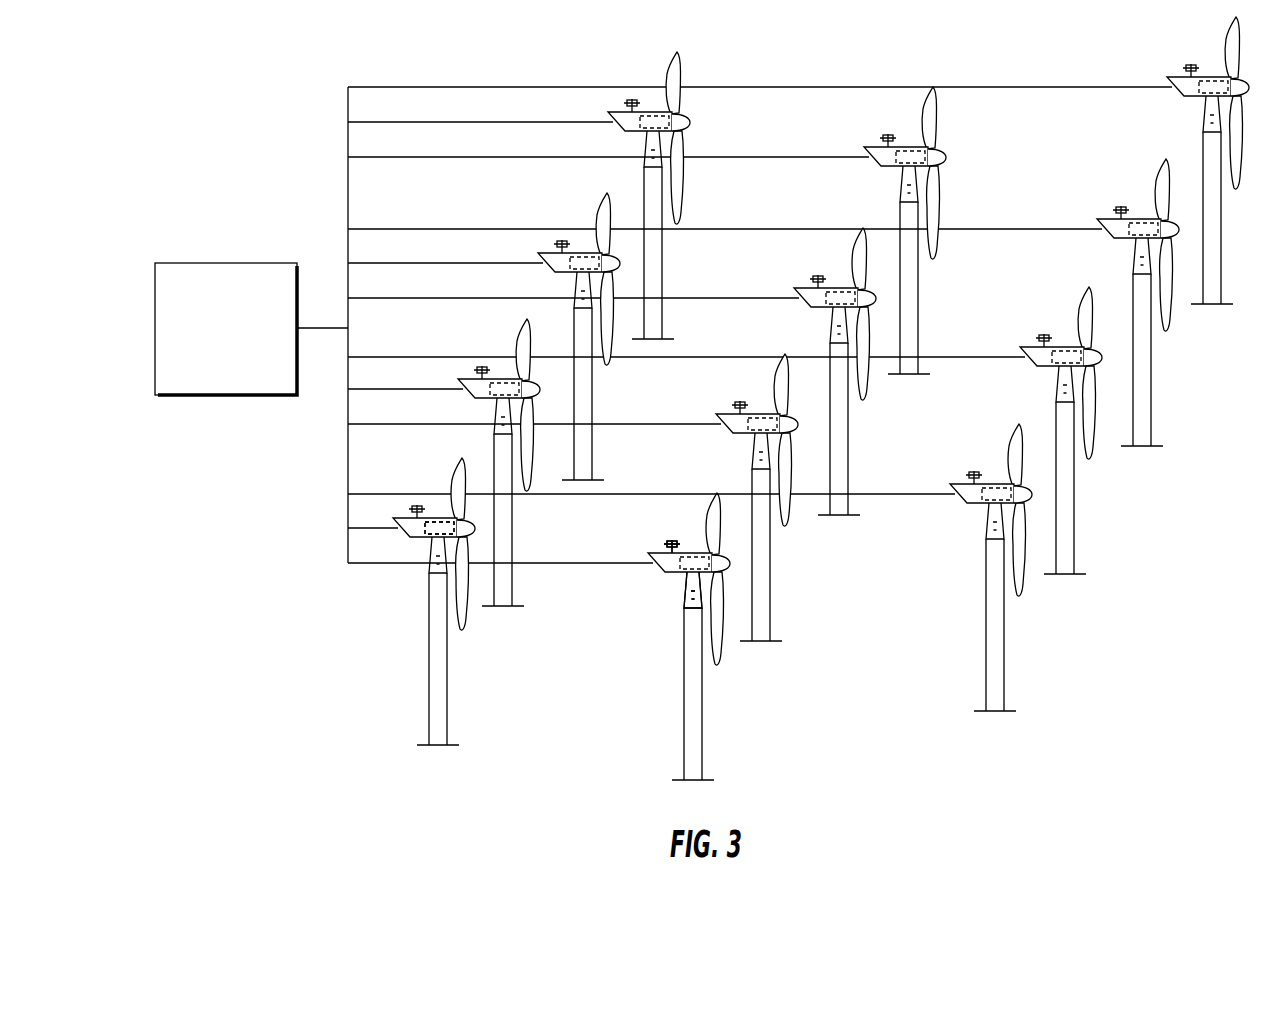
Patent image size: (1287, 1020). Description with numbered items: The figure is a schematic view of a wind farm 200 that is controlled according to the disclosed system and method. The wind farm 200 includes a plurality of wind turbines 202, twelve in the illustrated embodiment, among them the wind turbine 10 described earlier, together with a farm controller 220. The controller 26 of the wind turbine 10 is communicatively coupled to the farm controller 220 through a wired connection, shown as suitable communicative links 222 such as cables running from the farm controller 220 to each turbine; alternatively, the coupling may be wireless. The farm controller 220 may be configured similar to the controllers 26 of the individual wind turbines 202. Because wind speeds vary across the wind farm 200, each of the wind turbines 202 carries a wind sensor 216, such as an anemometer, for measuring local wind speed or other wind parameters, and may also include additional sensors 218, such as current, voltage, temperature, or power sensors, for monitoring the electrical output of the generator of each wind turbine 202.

The wind farm 200 is at (250, 142).
The wind turbines 202 is at (522, 550).
The wind turbine 10 is at (457, 690).
The controller 26 is at (435, 516).
The wind sensor 216 is at (666, 542).
The additional sensors 218 is at (684, 598).
The farm controller 220 is at (242, 336).
The communicative links 222 is at (483, 230).